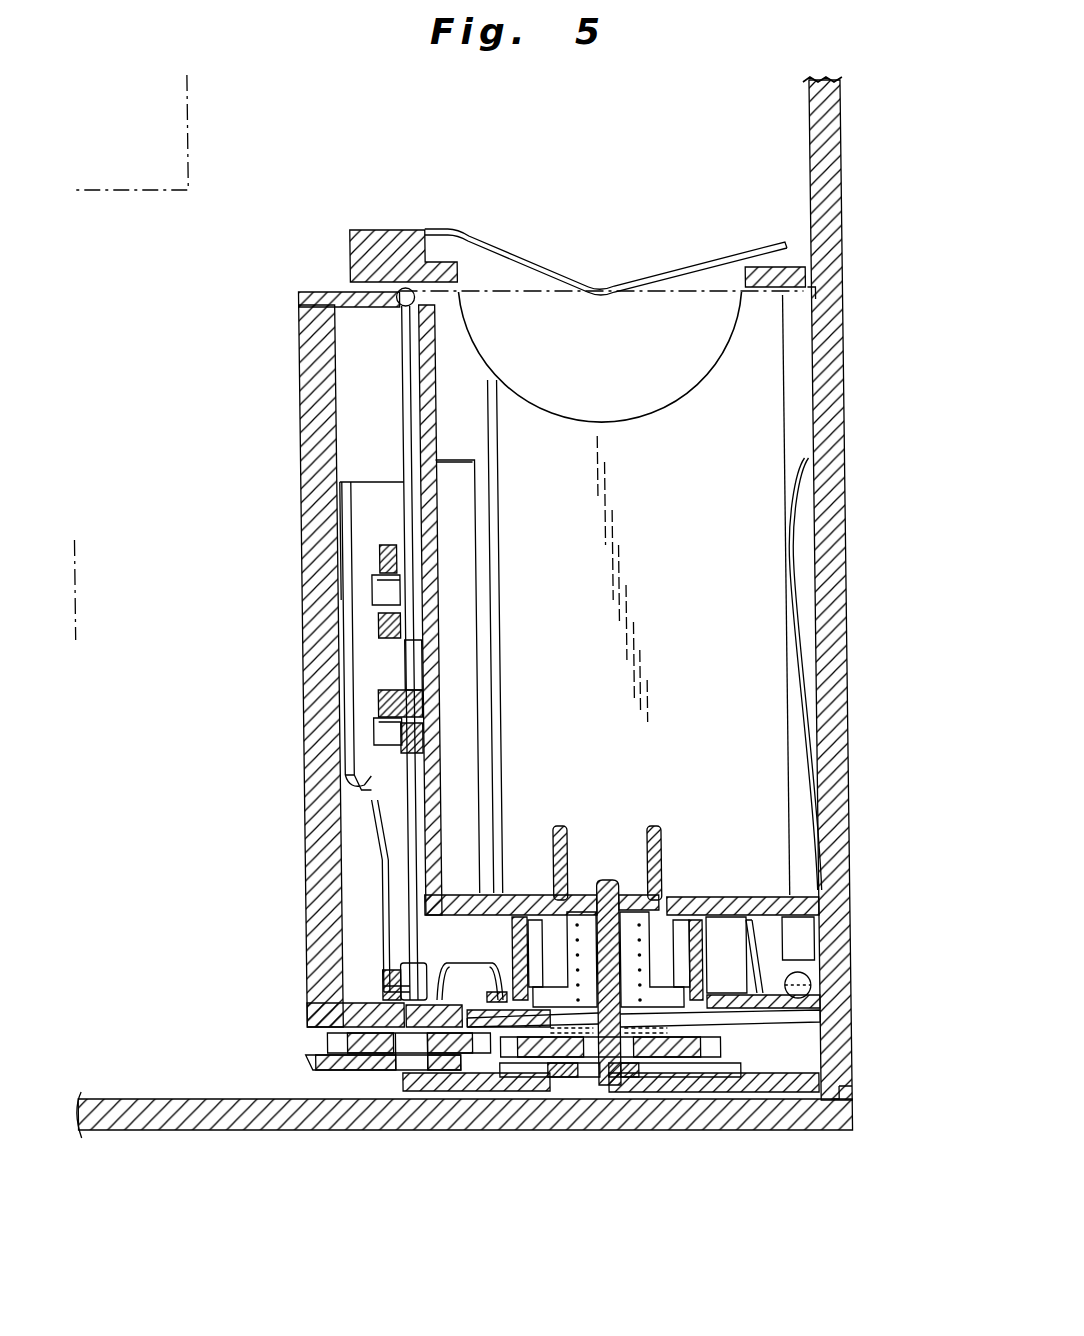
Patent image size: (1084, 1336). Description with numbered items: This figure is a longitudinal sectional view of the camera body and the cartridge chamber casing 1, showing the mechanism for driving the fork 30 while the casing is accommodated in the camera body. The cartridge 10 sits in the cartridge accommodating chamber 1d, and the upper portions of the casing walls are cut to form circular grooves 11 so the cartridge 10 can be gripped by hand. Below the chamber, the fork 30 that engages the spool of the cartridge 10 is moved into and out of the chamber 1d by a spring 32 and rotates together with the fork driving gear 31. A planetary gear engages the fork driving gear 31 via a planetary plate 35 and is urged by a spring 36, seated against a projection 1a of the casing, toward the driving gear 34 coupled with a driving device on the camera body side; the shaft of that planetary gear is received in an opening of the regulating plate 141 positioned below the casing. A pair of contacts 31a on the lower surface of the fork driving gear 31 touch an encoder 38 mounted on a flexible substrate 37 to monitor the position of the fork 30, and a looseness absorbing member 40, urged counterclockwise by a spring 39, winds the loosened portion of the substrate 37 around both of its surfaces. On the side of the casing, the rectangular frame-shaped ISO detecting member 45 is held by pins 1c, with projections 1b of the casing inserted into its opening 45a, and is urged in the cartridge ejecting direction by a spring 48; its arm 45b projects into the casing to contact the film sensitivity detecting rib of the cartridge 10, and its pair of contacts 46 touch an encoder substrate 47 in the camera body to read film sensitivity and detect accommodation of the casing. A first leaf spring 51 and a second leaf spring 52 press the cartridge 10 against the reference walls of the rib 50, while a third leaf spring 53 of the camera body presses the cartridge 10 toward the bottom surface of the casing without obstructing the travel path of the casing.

The cartridge chamber casing 1 is at (841, 365).
The projection 1a is at (371, 988).
The projections 1b is at (380, 588).
The pins 1c is at (380, 620).
The cartridge accommodating chamber 1d is at (684, 528).
The cartridge 10 is at (693, 290).
The circular grooves 11 is at (518, 400).
The fork 30 is at (524, 960).
The fork driving gear 31 is at (520, 1060).
The contacts 31a is at (687, 1062).
The spring 32 is at (663, 958).
The driving gear 34 is at (343, 1070).
The planetary plate 35 is at (575, 1065).
The spring 36 is at (420, 952).
The flexible substrate 37 is at (802, 947).
The encoder 38 is at (630, 1068).
The spring 39 is at (800, 987).
The looseness absorbing member 40 is at (751, 960).
The ISO detecting member 45 is at (368, 540).
The opening 45a is at (380, 858).
The arm 45b is at (398, 900).
The contacts 46 is at (352, 786).
The encoder substrate 47 is at (338, 632).
The spring 48 is at (393, 395).
The rib 50 is at (368, 500).
The first leaf spring 51 is at (789, 537).
The second leaf spring 52 is at (452, 552).
The third leaf spring 53 is at (471, 250).
The regulating plate 141 is at (788, 1022).